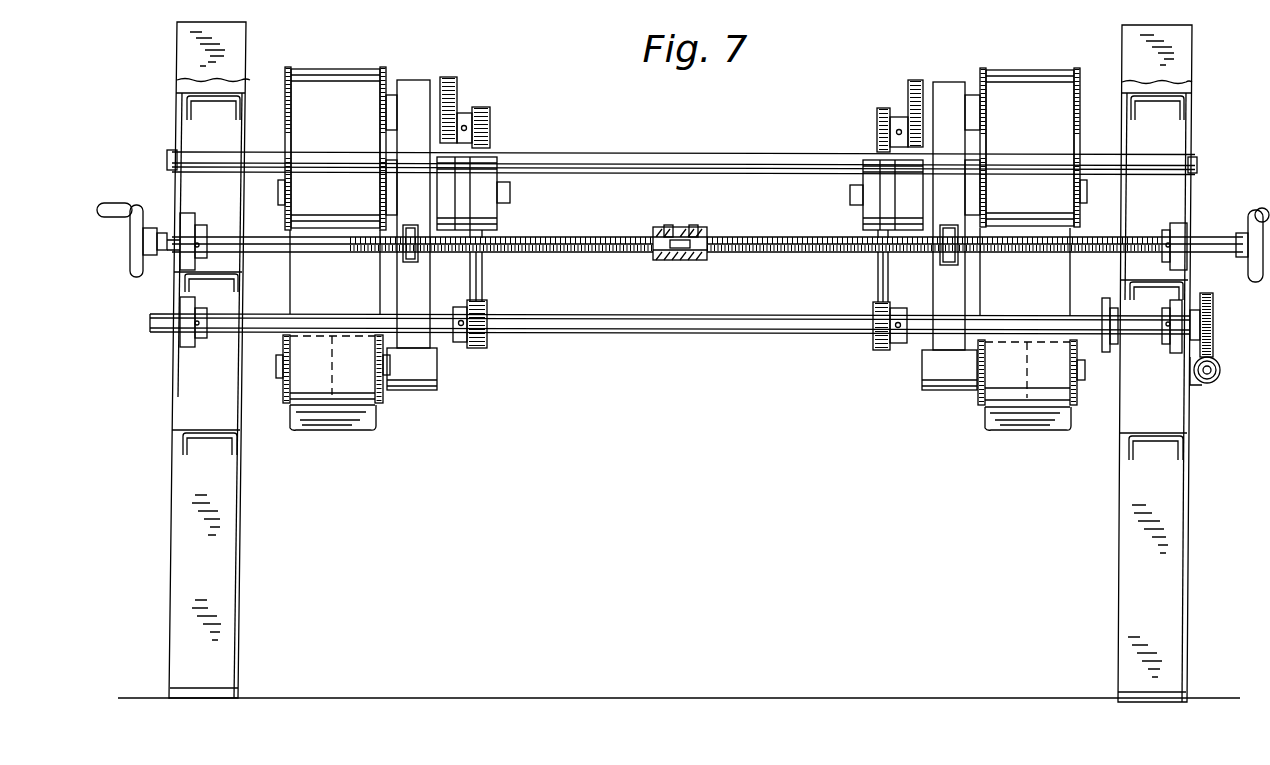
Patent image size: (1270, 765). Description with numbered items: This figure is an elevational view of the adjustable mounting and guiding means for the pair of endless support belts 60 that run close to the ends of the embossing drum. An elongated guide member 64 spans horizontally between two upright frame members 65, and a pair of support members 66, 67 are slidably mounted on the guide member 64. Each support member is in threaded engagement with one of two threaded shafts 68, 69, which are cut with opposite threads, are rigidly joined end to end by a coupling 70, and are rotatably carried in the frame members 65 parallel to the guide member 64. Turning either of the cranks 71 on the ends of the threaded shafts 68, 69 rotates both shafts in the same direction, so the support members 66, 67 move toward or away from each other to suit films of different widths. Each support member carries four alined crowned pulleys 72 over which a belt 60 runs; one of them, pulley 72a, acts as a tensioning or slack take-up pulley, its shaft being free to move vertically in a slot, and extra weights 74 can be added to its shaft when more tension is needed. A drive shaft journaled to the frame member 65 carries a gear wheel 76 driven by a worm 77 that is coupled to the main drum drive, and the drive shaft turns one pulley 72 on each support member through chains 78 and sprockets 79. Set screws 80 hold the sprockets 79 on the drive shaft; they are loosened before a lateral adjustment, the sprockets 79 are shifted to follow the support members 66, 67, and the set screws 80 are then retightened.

The endless support belt 60 is at (298, 276).
The guide member 64 is at (540, 158).
The frame member 65 is at (232, 528).
The support member 66 is at (413, 88).
The support member 67 is at (948, 95).
The threaded shaft 68 is at (603, 254).
The threaded shaft 69 is at (822, 254).
The coupling 70 is at (686, 256).
The crank 71 is at (134, 262).
The crowned pulley 72 is at (290, 67).
The tensioning pulley 72a is at (283, 176).
The weight 74 is at (498, 176).
The gear wheel 76 is at (1216, 328).
The worm 77 is at (1221, 368).
The chain 78 is at (452, 78).
The sprocket 79 is at (488, 338).
The set screw 80 is at (461, 340).